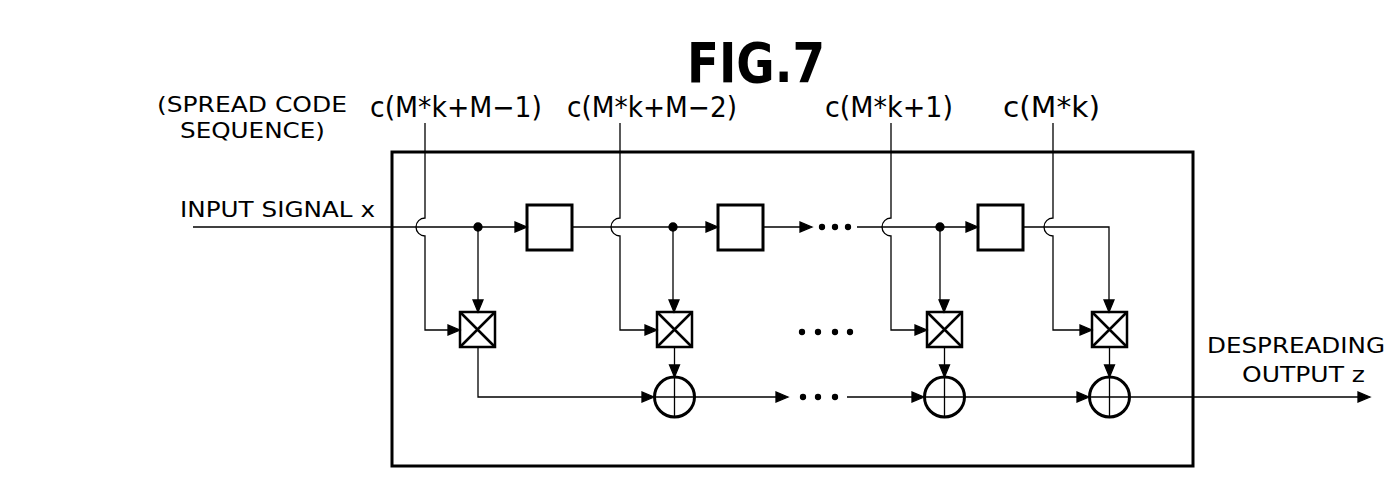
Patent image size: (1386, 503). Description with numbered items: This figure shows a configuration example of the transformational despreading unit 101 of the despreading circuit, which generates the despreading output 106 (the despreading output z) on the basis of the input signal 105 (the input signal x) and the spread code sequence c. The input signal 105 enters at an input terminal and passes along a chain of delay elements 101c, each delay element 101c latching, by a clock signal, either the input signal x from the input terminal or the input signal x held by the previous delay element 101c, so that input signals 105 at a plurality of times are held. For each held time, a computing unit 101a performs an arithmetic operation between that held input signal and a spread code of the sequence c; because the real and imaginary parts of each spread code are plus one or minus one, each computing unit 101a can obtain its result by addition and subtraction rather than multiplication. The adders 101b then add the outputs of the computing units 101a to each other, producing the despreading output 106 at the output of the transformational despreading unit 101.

The transformational despreading unit 101 is at (985, 467).
The computing unit 101a is at (495, 319).
The adder 101b is at (689, 411).
The delay element 101c is at (530, 204).
The input signal 105 is at (275, 228).
The despreading output 106 is at (1290, 398).